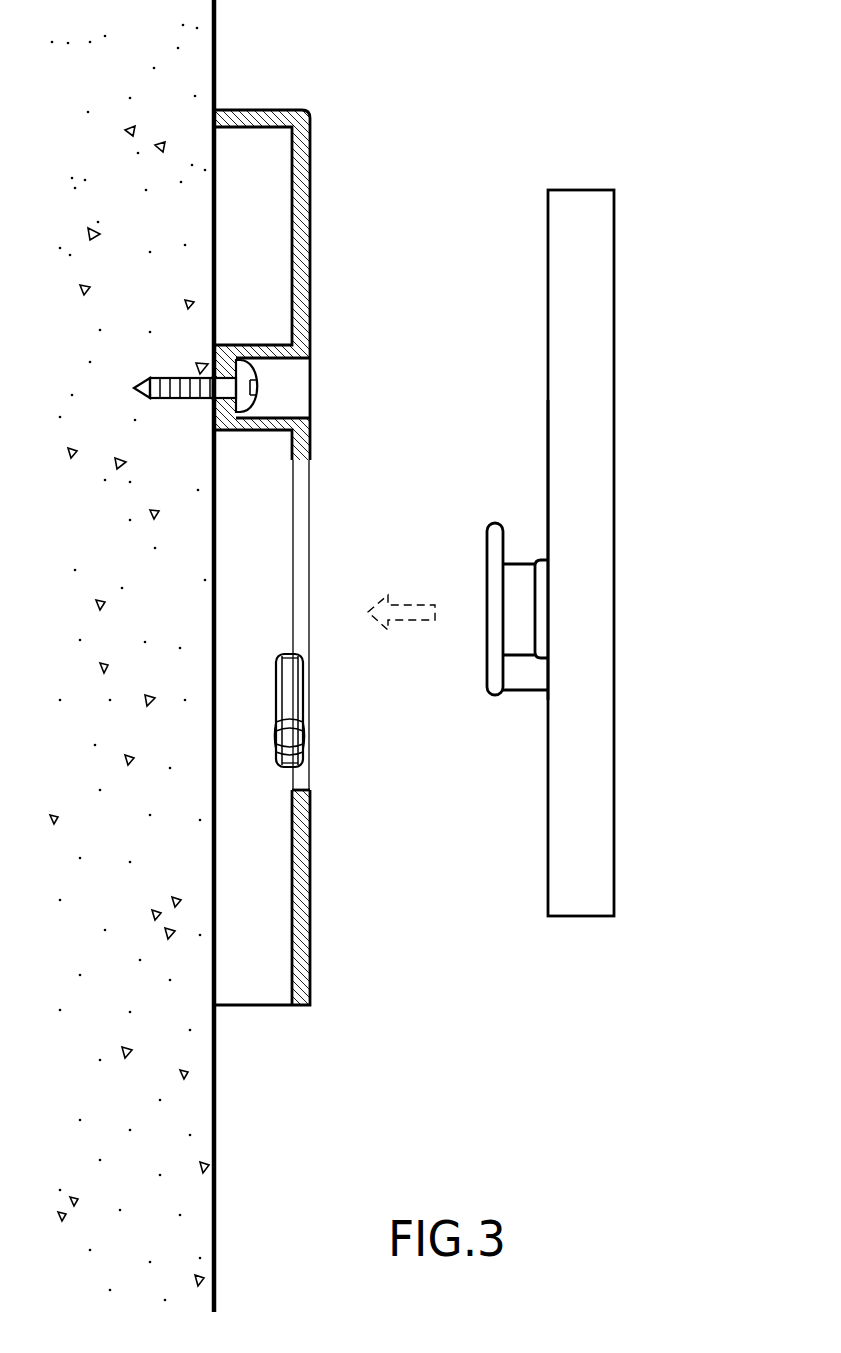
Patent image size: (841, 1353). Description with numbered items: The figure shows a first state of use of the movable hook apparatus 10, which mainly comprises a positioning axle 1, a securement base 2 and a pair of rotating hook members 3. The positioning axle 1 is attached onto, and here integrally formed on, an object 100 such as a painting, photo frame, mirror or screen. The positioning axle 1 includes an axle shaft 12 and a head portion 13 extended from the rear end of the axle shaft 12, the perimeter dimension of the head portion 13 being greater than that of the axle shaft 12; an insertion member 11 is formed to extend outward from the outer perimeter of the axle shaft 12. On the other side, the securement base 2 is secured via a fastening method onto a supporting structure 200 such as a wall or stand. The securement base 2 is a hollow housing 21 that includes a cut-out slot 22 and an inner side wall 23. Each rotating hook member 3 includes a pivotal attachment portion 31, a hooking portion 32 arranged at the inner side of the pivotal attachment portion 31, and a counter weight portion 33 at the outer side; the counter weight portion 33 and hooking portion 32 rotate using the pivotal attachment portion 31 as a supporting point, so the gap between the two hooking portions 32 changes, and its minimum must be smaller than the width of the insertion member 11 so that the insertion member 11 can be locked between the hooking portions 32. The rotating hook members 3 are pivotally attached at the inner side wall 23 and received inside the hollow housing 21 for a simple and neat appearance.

The positioning axle 1 is at (462, 617).
The securement base 2 is at (277, 557).
The rotating hook member 3 is at (308, 650).
The movable hook apparatus 10 is at (498, 212).
The insertion member 11 is at (521, 678).
The axle shaft 12 is at (524, 575).
The head portion 13 is at (493, 540).
The hollow housing 21 is at (299, 924).
The cut-out slot 22 is at (302, 485).
The inner side wall 23 is at (292, 876).
The pivotal attachment portion 31 is at (290, 750).
The hooking portion 32 is at (288, 732).
The counter weight portion 33 is at (288, 664).
The object 100 is at (598, 720).
The supporting structure 200 is at (185, 1106).